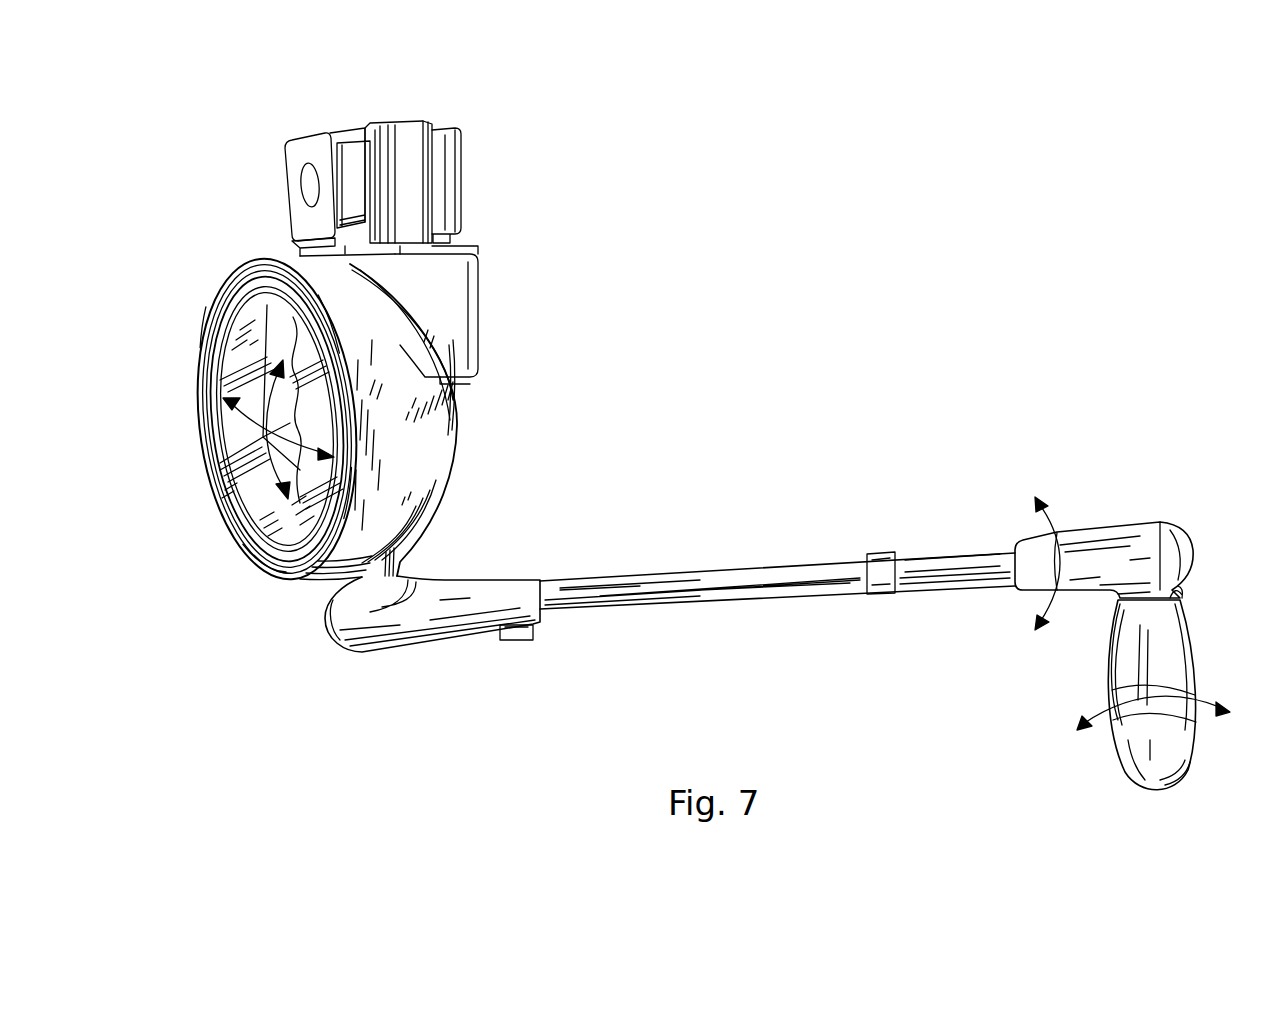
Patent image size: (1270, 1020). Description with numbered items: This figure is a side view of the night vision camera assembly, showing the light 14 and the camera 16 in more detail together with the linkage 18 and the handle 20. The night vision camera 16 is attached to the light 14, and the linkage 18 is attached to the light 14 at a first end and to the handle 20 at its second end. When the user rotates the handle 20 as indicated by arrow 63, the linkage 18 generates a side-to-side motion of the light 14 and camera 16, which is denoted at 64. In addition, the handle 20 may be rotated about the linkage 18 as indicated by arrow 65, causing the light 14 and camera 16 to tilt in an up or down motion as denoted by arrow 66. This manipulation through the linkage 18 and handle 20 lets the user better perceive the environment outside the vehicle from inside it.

The light 14 is at (298, 257).
The camera 16 is at (435, 126).
The linkage 18 is at (692, 574).
The handle 20 is at (1185, 671).
The arrow 63 is at (1102, 700).
The side-to-side motion 64 is at (248, 418).
The arrow 65 is at (1055, 526).
The arrow 66 is at (247, 387).